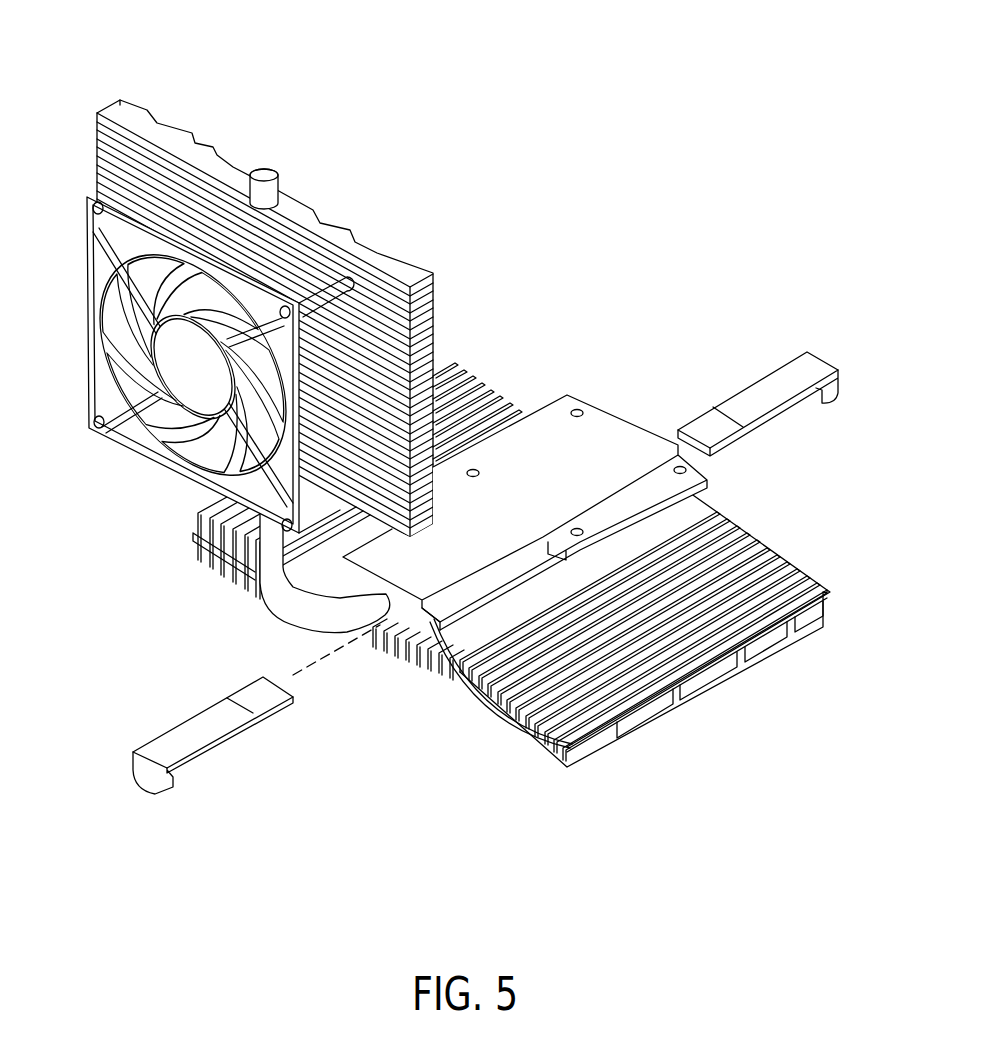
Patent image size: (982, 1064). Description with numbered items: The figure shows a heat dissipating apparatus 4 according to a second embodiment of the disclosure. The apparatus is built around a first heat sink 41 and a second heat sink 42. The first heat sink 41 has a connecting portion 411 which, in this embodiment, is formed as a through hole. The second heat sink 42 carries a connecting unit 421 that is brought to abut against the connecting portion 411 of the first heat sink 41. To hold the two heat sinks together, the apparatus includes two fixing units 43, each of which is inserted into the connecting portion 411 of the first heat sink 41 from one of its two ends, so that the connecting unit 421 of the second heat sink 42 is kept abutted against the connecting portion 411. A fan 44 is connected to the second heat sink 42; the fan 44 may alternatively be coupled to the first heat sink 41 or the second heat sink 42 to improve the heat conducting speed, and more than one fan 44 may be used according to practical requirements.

The heat dissipating apparatus 4 is at (636, 78).
The first heat sink 41 is at (511, 468).
The connecting portion 411 is at (381, 626).
The second heat sink 42 is at (415, 270).
The connecting unit 421 is at (293, 613).
The fixing unit 43 is at (767, 425).
The fan 44 is at (88, 235).